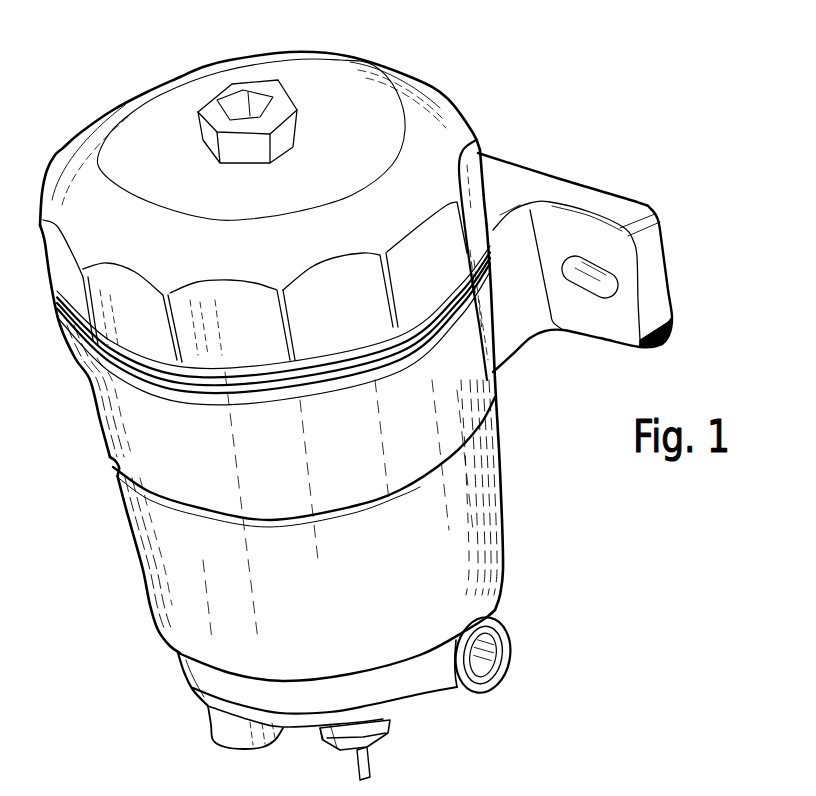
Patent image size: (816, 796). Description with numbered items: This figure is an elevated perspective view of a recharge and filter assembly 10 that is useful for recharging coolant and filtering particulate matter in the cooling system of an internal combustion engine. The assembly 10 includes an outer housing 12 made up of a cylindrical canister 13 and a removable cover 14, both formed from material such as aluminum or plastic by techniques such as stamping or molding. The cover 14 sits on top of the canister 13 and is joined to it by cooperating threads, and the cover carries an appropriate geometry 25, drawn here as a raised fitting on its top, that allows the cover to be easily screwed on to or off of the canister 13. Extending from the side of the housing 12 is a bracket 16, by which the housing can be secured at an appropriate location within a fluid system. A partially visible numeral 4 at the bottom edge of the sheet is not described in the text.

The recharge and filter assembly 10 is at (641, 70).
The outer housing 12 is at (100, 420).
The cylindrical canister 13 is at (483, 485).
The removable cover 14 is at (360, 83).
The bracket 16 is at (550, 190).
The geometry 25 is at (212, 98).
The drain fitting 4 is at (523, 789).